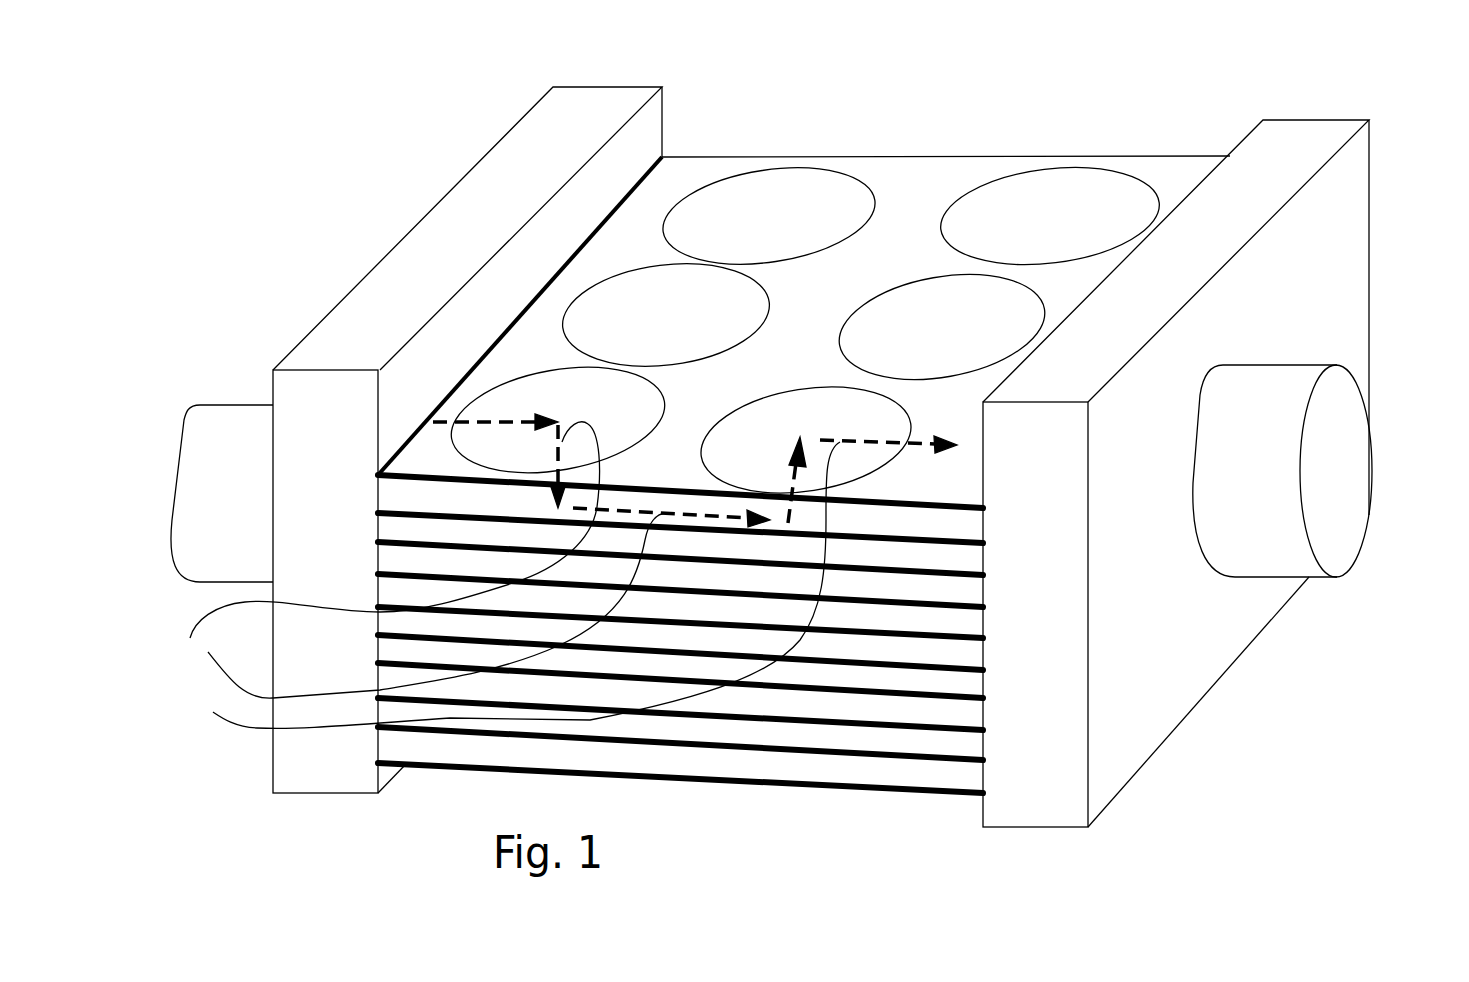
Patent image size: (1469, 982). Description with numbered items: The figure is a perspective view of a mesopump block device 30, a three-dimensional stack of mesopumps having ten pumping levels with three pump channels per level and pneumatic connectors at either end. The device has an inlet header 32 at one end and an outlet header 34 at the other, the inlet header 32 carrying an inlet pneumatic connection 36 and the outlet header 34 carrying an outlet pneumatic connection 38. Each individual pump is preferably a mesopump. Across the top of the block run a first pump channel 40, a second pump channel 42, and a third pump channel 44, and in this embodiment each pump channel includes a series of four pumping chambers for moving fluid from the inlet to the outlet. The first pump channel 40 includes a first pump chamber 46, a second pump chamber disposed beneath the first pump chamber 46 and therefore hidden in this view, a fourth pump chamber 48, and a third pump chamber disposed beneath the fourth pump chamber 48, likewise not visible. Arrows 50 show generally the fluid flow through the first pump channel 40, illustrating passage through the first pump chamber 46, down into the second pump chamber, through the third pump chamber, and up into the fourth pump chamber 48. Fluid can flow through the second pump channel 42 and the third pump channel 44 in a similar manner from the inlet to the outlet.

The mesopump block device 30 is at (1088, 83).
The inlet header 32 is at (363, 298).
The outlet header 34 is at (1317, 153).
The inlet pneumatic connection 36 is at (187, 475).
The outlet pneumatic connection 38 is at (1300, 383).
The first pump channel 40 is at (1073, 383).
The second pump channel 42 is at (1143, 295).
The third pump channel 44 is at (1232, 207).
The first pump chamber 46 is at (535, 403).
The fourth pump chamber 48 is at (863, 420).
The arrows 50 is at (570, 607).